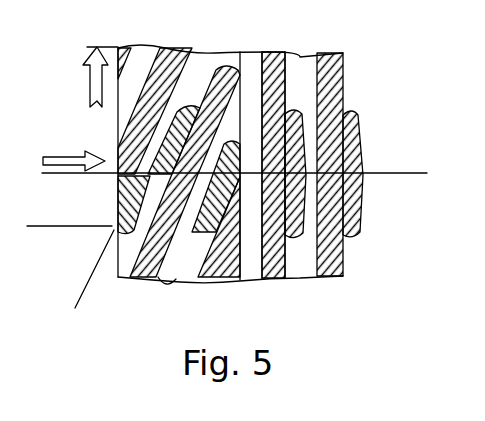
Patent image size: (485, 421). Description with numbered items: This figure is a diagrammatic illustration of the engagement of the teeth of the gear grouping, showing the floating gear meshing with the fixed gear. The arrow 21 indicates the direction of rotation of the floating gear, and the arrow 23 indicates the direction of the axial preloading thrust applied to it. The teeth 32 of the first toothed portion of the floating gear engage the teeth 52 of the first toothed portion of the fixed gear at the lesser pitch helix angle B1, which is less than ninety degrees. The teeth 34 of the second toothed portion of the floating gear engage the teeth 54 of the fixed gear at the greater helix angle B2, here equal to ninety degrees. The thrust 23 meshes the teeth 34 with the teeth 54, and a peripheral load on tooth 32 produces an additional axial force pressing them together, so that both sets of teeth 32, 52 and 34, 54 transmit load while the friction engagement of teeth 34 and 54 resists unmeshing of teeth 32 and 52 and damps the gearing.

The arrow 21 is at (87, 95).
The arrow 23 is at (78, 155).
The teeth 32 is at (166, 283).
The teeth 34 is at (343, 258).
The teeth 52 is at (200, 108).
The teeth 54 is at (362, 222).
The lesser pitch helix angle B1 is at (32, 226).
The greater helix angle B2 is at (420, 175).